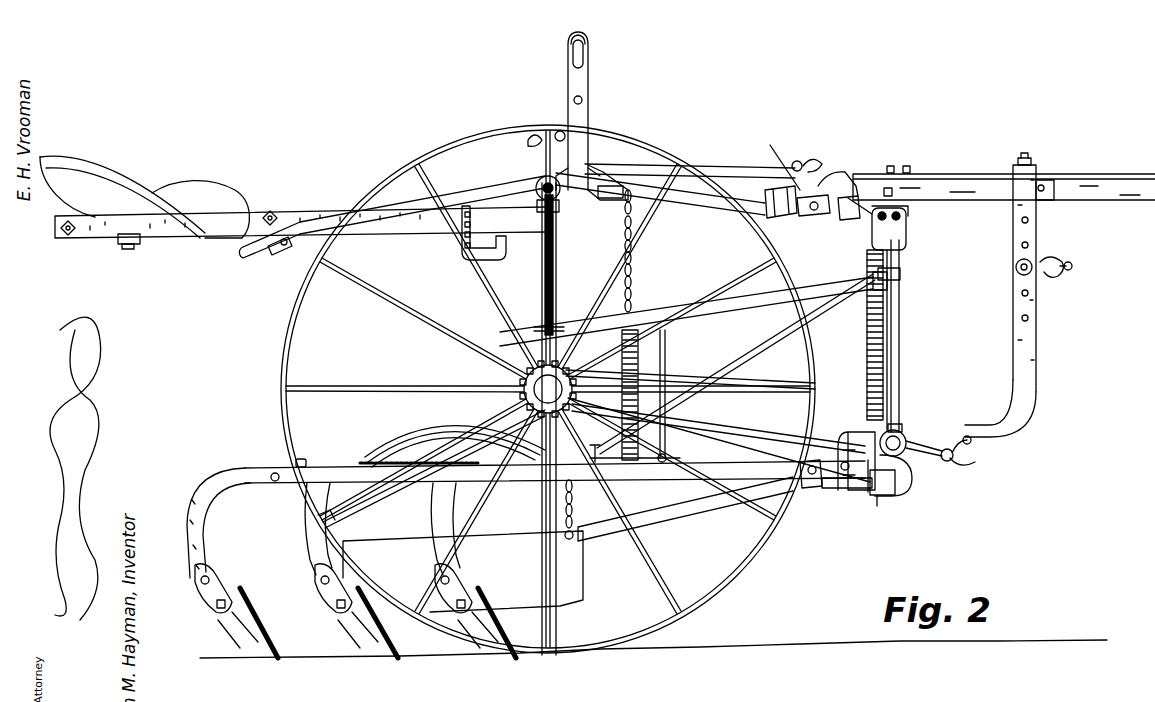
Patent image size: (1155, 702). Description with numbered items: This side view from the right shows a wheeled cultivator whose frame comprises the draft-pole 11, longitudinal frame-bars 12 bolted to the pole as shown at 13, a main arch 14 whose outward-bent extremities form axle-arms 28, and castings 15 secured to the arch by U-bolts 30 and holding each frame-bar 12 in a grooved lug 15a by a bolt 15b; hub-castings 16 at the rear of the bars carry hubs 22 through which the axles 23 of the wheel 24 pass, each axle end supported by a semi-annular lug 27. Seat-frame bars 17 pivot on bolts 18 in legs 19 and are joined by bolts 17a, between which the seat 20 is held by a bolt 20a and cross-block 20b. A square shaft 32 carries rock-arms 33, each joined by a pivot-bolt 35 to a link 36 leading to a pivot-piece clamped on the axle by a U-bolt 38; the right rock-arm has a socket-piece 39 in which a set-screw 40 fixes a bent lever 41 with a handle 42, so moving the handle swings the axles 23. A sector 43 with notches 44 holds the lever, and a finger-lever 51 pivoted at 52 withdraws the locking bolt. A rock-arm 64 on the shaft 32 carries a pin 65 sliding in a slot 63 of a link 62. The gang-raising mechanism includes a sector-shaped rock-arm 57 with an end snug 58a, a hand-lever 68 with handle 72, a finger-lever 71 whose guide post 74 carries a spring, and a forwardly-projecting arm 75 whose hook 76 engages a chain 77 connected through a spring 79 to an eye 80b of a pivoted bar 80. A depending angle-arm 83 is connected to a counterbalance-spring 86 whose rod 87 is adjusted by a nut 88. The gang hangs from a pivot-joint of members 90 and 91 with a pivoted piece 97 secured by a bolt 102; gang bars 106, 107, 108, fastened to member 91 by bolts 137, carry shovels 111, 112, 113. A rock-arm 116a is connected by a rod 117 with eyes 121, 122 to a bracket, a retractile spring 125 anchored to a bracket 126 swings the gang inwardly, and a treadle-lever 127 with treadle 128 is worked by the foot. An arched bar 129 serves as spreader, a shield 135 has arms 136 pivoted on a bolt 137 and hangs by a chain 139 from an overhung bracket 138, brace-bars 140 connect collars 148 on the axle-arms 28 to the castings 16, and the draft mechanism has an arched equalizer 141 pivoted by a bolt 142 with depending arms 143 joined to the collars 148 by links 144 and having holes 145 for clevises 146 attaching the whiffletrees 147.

The draft-pole 11 is at (1110, 189).
The longitudinal frame-bars 12 is at (702, 206).
The bolted joint 13 is at (1041, 186).
The main arch 14 is at (900, 331).
The castings 15 is at (907, 240).
The grooved lug 15a is at (893, 166).
The bolt 15b is at (890, 190).
The hub-castings 16 is at (612, 199).
The longitudinal bars of seat-frame 17 is at (287, 218).
The bolts 17a is at (270, 210).
The pivot-bolts 18 is at (462, 226).
The legs 19 is at (463, 246).
The seat 20 is at (144, 197).
The bolt 20a is at (128, 249).
The cross-block 20b is at (120, 243).
The hubs 22 is at (540, 212).
The axles 23 is at (541, 311).
The wheel 24 is at (748, 592).
The semi-annular lug 27 is at (540, 180).
The axle-arms 28 is at (908, 438).
The U-bolts 30 is at (892, 212).
The square shaft 32 is at (845, 216).
The rock-arm 33 is at (901, 275).
The pivot-bolt 35 is at (876, 286).
The link 36 is at (806, 288).
The U-bolt 38 is at (540, 328).
The socket-piece 39 is at (793, 218).
The set-screw 40 is at (813, 216).
The bent lever 41 is at (450, 192).
The handle 42 is at (248, 259).
The sector 43 is at (824, 180).
The notches 44 is at (775, 152).
The finger-lever 51 is at (274, 256).
The pivot 52 is at (284, 247).
The sector-shaped rock-arm 57 is at (557, 131).
The snug 58a is at (530, 138).
The link 62 is at (746, 168).
The slot 63 is at (808, 160).
The rock-arm 64 is at (846, 194).
The pin 65 is at (796, 160).
The hand-lever 68 is at (590, 132).
The finger-lever 71 is at (571, 46).
The handle 72 is at (586, 52).
The guide post 74 is at (573, 100).
The forwardly-projecting arm 75 is at (598, 170).
The hook 76 is at (633, 200).
The chain 77 is at (633, 260).
The spring 79 is at (622, 374).
The horizontally-projecting arm 80 is at (596, 455).
The eye 80b is at (660, 460).
The depending angle-arm 83 is at (908, 492).
The coiled counterbalance-spring 86 is at (867, 352).
The rod 87 is at (900, 259).
The nut 88 is at (900, 200).
The pivot-joint member 90 is at (882, 496).
The pivot-joint member 91 is at (849, 430).
The pivoted piece 97 is at (846, 490).
The bolt 102 is at (877, 506).
The longitudinal frame-bar 106 is at (262, 468).
The longitudinal frame-bar 107 is at (452, 503).
The longitudinal frame-bar 108 is at (306, 538).
The shovel 111 is at (280, 644).
The shovel 112 is at (506, 642).
The shovel 113 is at (398, 644).
The upwardly-extending rock-arm 116a is at (535, 410).
The rod 117 is at (700, 426).
The eye 121 is at (902, 428).
The eye 122 is at (867, 488).
The retractile coiled spring 125 is at (432, 462).
The bracket 126 is at (302, 459).
The treadle-lever 127 is at (452, 423).
The treadle 128 is at (358, 494).
The arched bar 129 is at (666, 368).
The shield 135 is at (463, 571).
The arms 136 is at (684, 510).
The bolts 137 is at (814, 488).
The overhung bracket 138 is at (578, 410).
The chain 139 is at (574, 524).
The brace-bars 140 is at (790, 376).
The arched equalizer 141 is at (1040, 172).
The bolt 142 is at (1030, 156).
The vertically-depending arms 143 is at (1038, 370).
The links 144 is at (968, 448).
The holes 145 is at (1022, 221).
The clevises 146 is at (1020, 275).
The whiffletrees 147 is at (1062, 264).
The collars 148 is at (915, 462).